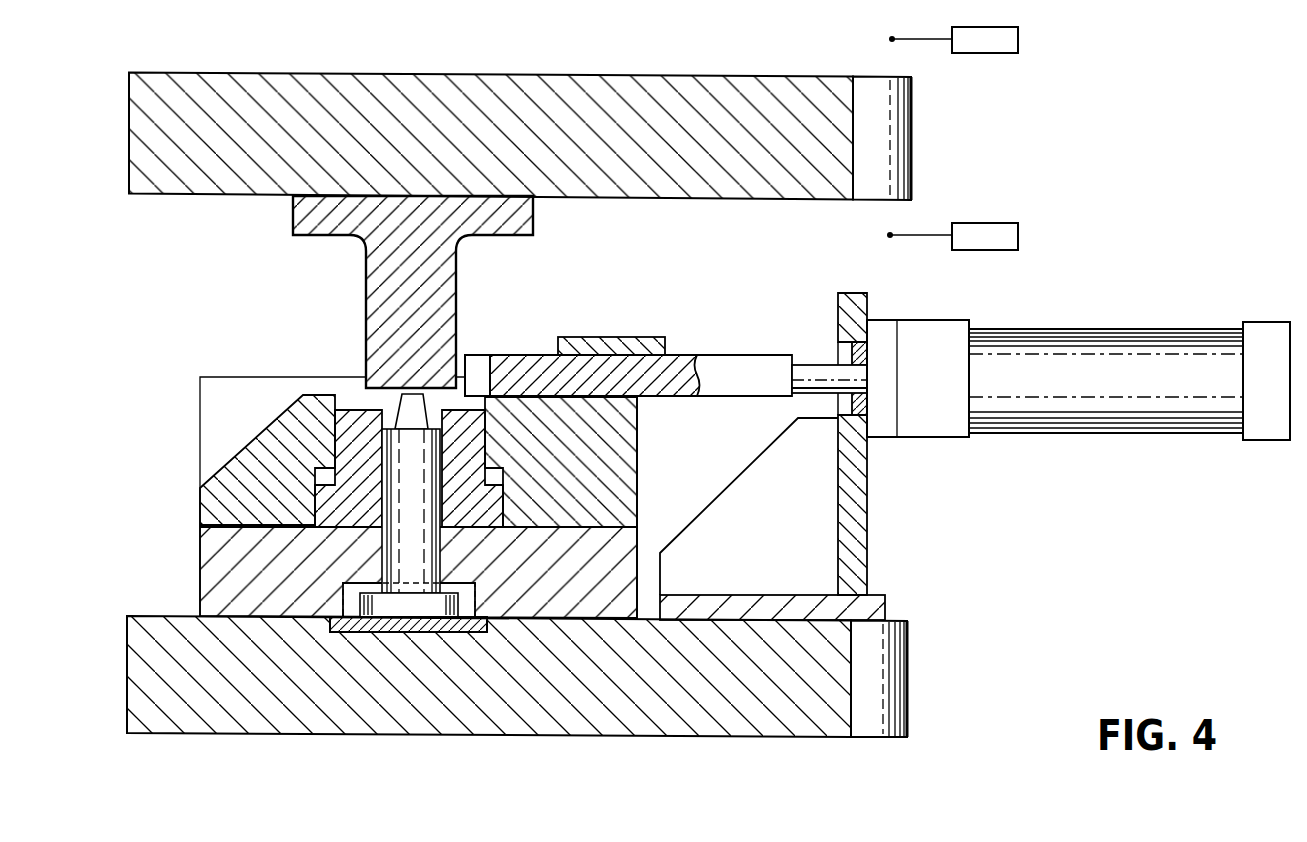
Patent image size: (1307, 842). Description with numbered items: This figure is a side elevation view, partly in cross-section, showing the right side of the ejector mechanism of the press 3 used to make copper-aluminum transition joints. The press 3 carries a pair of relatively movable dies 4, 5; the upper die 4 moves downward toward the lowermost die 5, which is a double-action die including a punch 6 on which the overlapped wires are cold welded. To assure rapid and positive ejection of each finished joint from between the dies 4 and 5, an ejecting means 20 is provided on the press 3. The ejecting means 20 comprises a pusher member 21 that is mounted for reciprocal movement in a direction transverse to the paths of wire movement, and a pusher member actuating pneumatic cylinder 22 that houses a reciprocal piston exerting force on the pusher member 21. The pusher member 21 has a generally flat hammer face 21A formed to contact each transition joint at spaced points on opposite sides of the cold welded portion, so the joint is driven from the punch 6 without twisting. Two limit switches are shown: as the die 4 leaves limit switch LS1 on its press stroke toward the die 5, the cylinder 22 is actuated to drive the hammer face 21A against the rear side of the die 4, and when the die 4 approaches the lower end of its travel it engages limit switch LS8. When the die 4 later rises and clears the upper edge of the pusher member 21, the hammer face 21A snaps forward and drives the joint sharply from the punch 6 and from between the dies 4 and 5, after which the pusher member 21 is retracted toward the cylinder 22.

The press 3 is at (302, 290).
The die 4 is at (458, 290).
The die 5 is at (222, 488).
The punch 6 is at (418, 421).
The ejecting means 20 is at (1086, 306).
The pusher member 21 is at (731, 356).
The hammer face 21A is at (470, 353).
The pneumatic cylinder 22 is at (1137, 432).
The limit switch LS1 is at (1018, 42).
The limit switch LS8 is at (1018, 234).